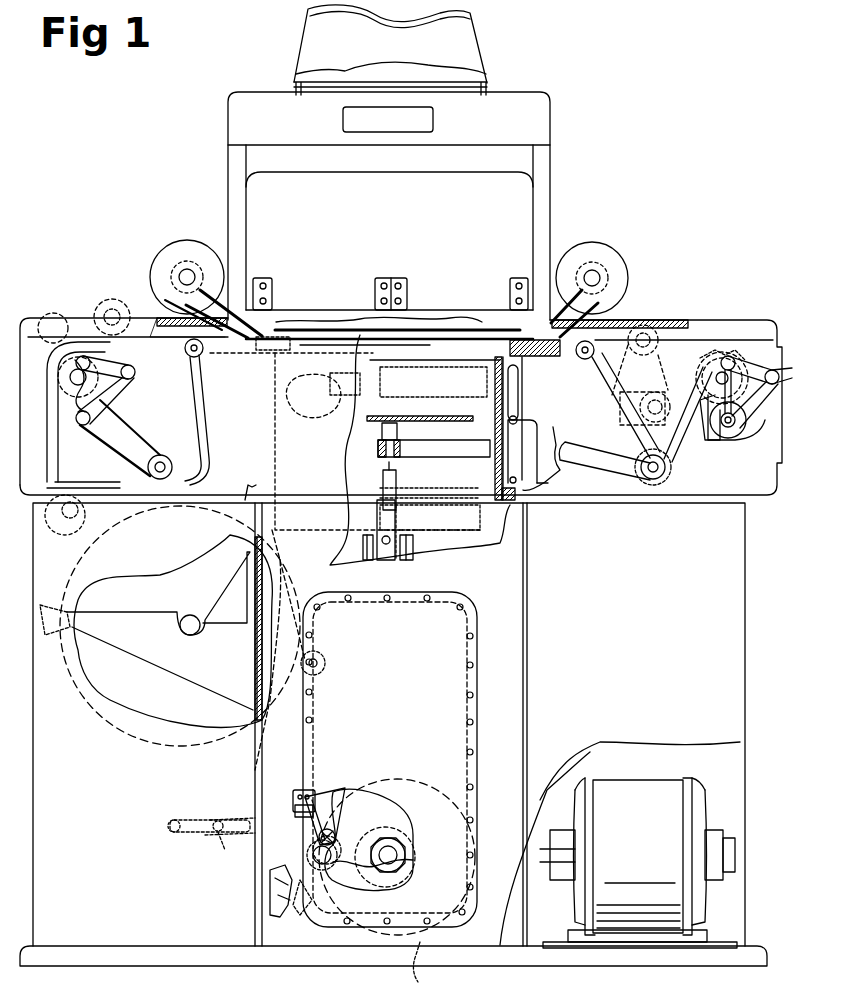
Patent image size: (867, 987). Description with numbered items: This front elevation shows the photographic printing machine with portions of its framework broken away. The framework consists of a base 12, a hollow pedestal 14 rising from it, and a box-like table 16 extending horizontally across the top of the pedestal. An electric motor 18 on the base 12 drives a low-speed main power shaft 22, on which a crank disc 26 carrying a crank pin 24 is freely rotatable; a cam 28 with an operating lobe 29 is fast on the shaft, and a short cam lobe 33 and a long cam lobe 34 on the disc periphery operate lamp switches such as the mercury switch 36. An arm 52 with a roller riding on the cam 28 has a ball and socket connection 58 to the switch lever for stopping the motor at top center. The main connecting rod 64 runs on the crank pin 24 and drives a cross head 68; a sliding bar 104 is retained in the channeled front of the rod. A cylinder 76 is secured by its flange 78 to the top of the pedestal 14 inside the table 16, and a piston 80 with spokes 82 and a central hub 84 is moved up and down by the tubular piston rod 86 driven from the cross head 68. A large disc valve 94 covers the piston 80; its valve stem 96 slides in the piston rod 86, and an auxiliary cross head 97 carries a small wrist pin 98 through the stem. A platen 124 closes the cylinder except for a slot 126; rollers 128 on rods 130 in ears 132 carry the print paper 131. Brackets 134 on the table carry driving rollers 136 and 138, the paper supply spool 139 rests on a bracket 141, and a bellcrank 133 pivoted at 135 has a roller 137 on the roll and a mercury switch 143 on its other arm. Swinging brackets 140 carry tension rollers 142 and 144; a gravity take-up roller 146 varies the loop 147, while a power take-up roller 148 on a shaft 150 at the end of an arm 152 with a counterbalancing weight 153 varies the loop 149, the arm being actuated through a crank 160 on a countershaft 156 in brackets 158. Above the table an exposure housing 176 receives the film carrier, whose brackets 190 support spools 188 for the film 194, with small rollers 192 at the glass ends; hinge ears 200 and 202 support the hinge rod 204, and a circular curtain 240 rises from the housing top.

The base 12 is at (108, 958).
The hollow pedestal 14 is at (255, 545).
The box-like table 16 is at (628, 505).
The electric motor 18 is at (700, 783).
The main power shaft 22 is at (405, 855).
The crank pin 24 is at (312, 857).
The crank disc 26 is at (438, 782).
The cam 28 is at (415, 833).
The operating lobe 29 is at (340, 833).
The short cam lobe 33 is at (308, 915).
The long cam lobe 34 is at (424, 964).
The mercury switch 36 is at (280, 918).
The arm 52 is at (300, 788).
The ball and socket connection 58 is at (294, 795).
The main connecting rod 64 is at (380, 796).
The cross head 68 is at (412, 553).
The cylinder 76 is at (510, 520).
The flange 78 is at (260, 490).
The piston 80 is at (480, 380).
The spokes 82 is at (434, 448).
The central hub 84 is at (376, 449).
The tubular piston rod 86 is at (378, 462).
The disc valve 94 is at (367, 418).
The valve stem 96 is at (380, 433).
The auxiliary cross head 97 is at (404, 513).
The small wrist pin 98 is at (377, 513).
The sliding bar 104 is at (340, 788).
The platen 124 is at (510, 344).
The slot 126 is at (443, 355).
The rollers 128 is at (206, 380).
The rods 130 is at (184, 348).
The print paper 131 is at (80, 520).
The ears 132 is at (210, 360).
The bellcrank 133 is at (252, 765).
The brackets 134 is at (104, 466).
The pivot 135 is at (215, 845).
The driving roller 136 is at (120, 398).
The roller 137 is at (328, 665).
The driving roller 138 is at (720, 360).
The paper supply spool 139 is at (125, 740).
The swinging brackets 140 is at (88, 290).
The bracket 141 is at (145, 616).
The paper tension roller 142 is at (105, 412).
The mercury switch 143 is at (170, 835).
The paper tension roller 144 is at (745, 452).
The gravity operated take-up roller 146 is at (160, 453).
The loop 147 is at (136, 478).
The power operated take-up roller 148 is at (663, 385).
The loop 149 is at (608, 410).
The shaft 150 is at (670, 475).
The arm 152 is at (556, 455).
The counterbalancing weight 153 is at (313, 390).
The countershaft 156 is at (522, 407).
The brackets 158 is at (538, 468).
The crank 160 is at (524, 390).
The exposure housing 176 is at (575, 194).
The spools 188 is at (158, 250).
The brackets 190 is at (226, 255).
The small rollers 192 is at (268, 346).
The film 194 is at (190, 329).
The hinge ears 200 is at (214, 298).
The hinge ears 202 is at (268, 322).
The hinge rod 204 is at (312, 292).
The circular curtain 240 is at (478, 48).